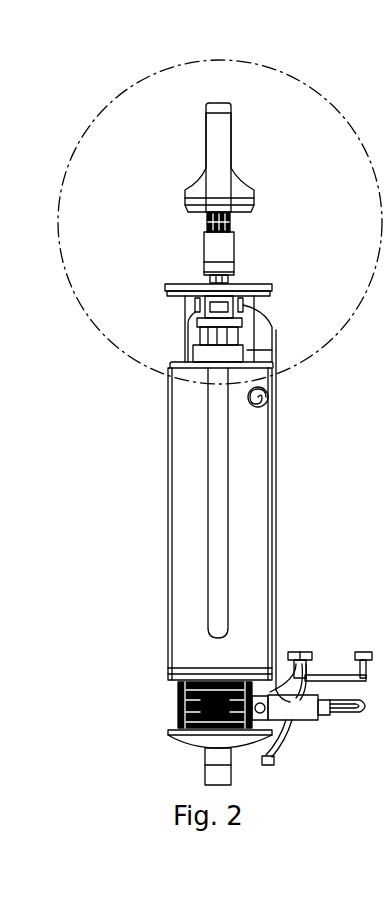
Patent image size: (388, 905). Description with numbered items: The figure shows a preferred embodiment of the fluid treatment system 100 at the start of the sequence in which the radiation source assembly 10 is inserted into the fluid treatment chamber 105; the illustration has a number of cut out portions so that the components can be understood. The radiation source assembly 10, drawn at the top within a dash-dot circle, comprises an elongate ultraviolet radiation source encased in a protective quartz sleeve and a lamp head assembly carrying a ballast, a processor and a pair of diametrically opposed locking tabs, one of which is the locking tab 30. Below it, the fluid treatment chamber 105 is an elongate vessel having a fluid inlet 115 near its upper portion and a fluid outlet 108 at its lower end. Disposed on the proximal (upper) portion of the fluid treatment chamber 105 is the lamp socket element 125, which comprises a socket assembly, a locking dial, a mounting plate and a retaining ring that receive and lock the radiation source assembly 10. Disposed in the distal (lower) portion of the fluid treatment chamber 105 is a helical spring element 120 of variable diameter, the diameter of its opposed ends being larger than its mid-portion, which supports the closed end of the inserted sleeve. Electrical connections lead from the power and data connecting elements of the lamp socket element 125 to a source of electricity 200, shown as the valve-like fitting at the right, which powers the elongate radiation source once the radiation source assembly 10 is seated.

The radiation source assembly 10 is at (276, 168).
The locking tab 30 is at (207, 227).
The fluid treatment system 100 is at (123, 537).
The fluid treatment chamber 105 is at (168, 470).
The fluid outlet 108 is at (205, 762).
The fluid inlet 115 is at (266, 392).
The helical spring element 120 is at (177, 690).
The lamp socket element 125 is at (157, 282).
The source of electricity 200 is at (362, 650).